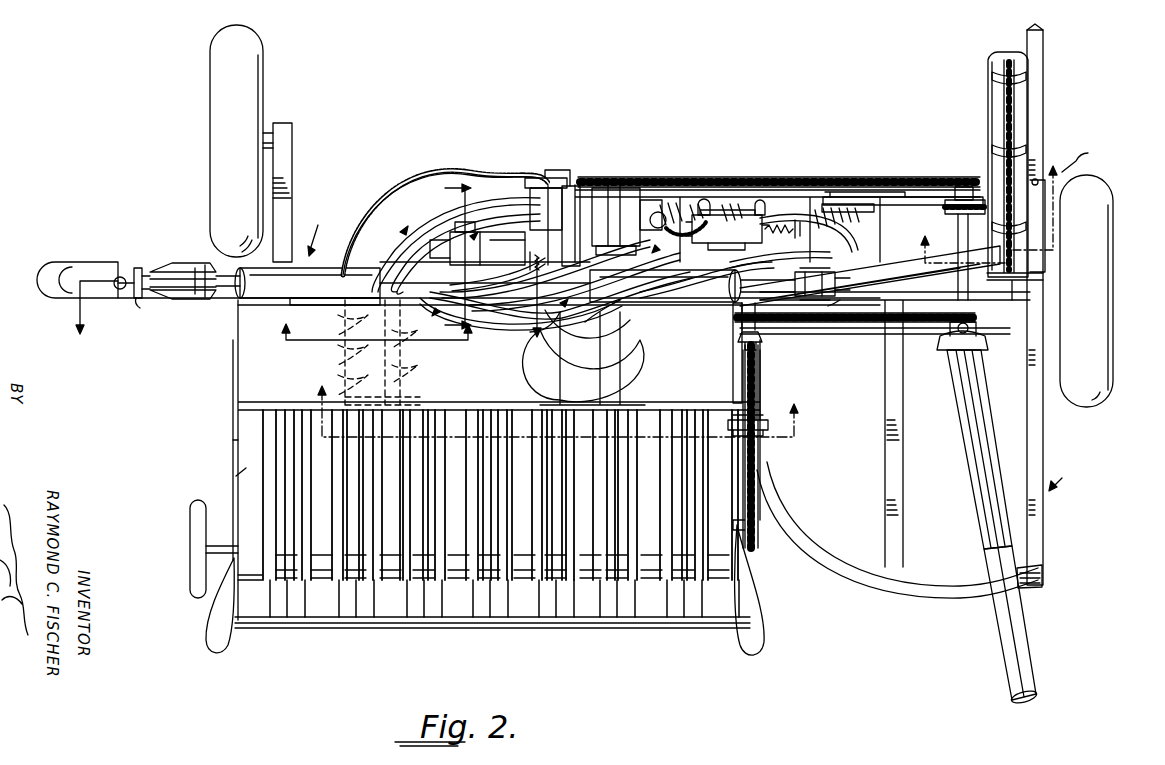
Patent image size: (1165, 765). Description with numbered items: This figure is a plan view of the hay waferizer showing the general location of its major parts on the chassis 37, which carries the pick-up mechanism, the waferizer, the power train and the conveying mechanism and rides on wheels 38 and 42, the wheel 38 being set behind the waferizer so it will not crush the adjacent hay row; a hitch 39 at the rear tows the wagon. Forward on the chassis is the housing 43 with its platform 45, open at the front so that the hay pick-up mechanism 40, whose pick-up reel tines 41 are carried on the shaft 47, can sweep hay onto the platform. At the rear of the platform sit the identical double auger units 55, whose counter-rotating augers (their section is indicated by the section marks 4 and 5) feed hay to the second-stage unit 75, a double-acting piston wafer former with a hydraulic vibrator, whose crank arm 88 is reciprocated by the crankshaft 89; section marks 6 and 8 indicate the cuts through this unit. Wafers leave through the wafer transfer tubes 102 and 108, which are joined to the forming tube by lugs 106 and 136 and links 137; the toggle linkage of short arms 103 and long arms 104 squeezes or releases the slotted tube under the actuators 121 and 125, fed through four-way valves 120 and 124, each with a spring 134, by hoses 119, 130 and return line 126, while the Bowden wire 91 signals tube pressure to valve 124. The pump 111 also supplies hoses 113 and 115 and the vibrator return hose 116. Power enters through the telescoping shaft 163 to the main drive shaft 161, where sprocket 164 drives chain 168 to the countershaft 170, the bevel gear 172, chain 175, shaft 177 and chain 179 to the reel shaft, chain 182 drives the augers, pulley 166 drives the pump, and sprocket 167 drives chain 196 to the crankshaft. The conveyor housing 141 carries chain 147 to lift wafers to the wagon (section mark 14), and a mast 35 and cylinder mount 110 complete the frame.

The section line 4- 4 is at (383, 327).
The section line 5- 5 is at (556, 401).
The section line 6- 6 is at (307, 305).
The section line 8- 8 is at (450, 257).
The section line 14- 14 is at (988, 204).
The mast 35 is at (1040, 70).
The chassis 37 is at (1063, 474).
The wheel 38 is at (216, 71).
The hitch 39 is at (1085, 154).
The hay pick-up mechanism 40 is at (436, 637).
The pick-up reel tines 41 is at (332, 598).
The wheel 42 is at (1108, 218).
The housing 43 is at (233, 436).
The platform 45 is at (236, 475).
The shaft 47 is at (748, 540).
The double auger unit 55 is at (514, 372).
The second-stage unit 75 is at (315, 232).
The crank arm 88 is at (516, 236).
The crankshaft 89 is at (616, 185).
The Bowden wire 91 is at (408, 190).
The wafer transfer tube 102 is at (116, 260).
The short arm 103 is at (158, 298).
The long arm 104 is at (193, 264).
The lug 106 is at (140, 268).
The tube 108 is at (892, 248).
The cylinder mount 110 is at (338, 302).
The pump 111 is at (848, 216).
The hose 113 is at (604, 308).
The hose 115 is at (575, 318).
The vibrator return hose 116 is at (652, 202).
The hose 119 is at (790, 210).
The four-way valve 120 is at (727, 224).
The actuator 121 is at (698, 300).
The four-way valve 124 is at (532, 186).
The actuator 125 is at (292, 300).
The return line 126 is at (437, 246).
The line 130 is at (520, 201).
The spring 134 is at (532, 262).
The lug 136 is at (122, 292).
The link 137 is at (137, 300).
The conveyor housing 141 is at (990, 90).
The chain 147 is at (1006, 100).
The main drive shaft 161 is at (968, 296).
The telescoping shaft 163 is at (1020, 632).
The sprocket 164 is at (982, 342).
The pulley 166 is at (958, 214).
The sprocket 167 is at (971, 185).
The chain 168 is at (876, 324).
The countershaft 170 is at (762, 372).
The bevel gear 172 is at (733, 340).
The chain 175 is at (752, 366).
The shaft 177 is at (822, 332).
The chain 179 is at (752, 470).
The chain 182 is at (768, 426).
The chain 196 is at (805, 174).